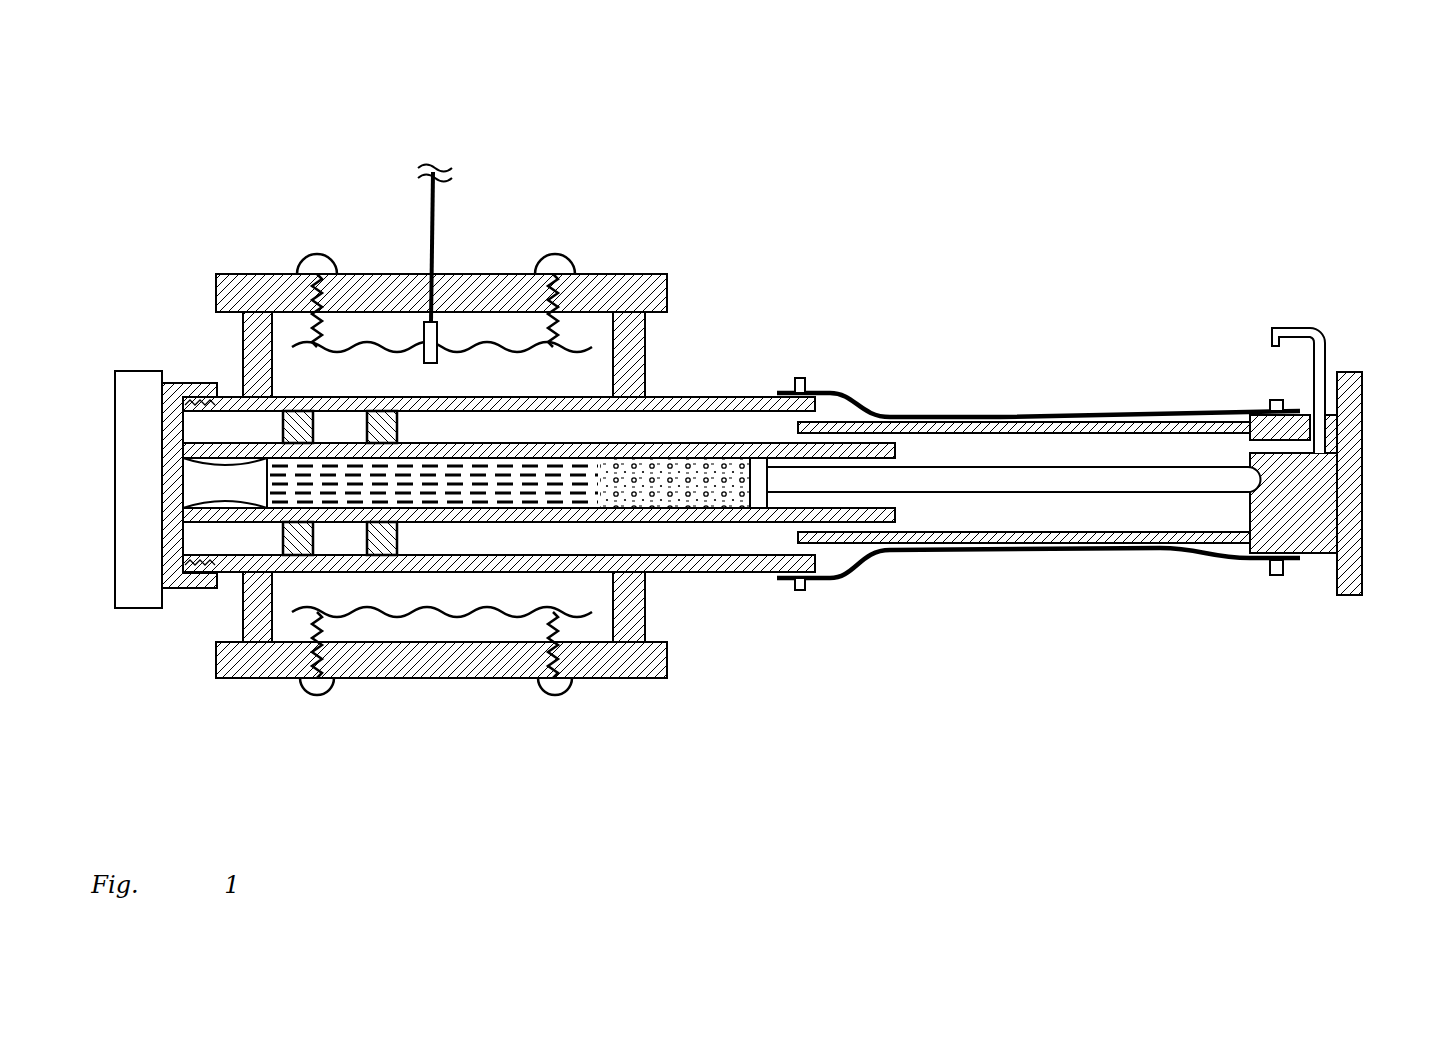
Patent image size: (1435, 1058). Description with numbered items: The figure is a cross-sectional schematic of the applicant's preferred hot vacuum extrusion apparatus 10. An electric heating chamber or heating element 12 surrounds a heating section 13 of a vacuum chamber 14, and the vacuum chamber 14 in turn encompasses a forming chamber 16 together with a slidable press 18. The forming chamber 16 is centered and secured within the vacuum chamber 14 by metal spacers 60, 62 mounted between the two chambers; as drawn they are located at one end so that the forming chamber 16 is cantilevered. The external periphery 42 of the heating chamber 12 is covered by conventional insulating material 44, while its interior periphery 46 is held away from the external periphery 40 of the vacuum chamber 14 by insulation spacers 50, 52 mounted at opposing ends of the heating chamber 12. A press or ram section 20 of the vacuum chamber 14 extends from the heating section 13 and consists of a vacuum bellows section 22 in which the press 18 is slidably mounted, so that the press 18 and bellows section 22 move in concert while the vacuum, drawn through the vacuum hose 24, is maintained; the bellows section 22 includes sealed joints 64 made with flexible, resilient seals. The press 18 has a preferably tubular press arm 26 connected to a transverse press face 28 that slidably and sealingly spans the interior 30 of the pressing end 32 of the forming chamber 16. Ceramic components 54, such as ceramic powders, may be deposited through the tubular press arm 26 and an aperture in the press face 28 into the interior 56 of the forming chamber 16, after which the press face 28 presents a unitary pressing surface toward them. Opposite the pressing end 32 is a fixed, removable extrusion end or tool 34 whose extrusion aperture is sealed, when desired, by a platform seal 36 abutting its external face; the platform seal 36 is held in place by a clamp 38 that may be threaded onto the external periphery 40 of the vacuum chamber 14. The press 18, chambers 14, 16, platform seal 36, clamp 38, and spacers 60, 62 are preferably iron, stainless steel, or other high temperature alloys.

The hot vacuum extrusion apparatus 10 is at (1145, 252).
The heating element 12 is at (497, 615).
The heating section 13 is at (499, 485).
The vacuum chamber 14 is at (456, 572).
The forming chamber 16 is at (413, 522).
The slidable press 18 is at (1148, 492).
The press section 20 is at (1372, 480).
The vacuum bellows section 22 is at (1020, 549).
The vacuum hose 24 is at (1297, 330).
The press arm 26 is at (1025, 482).
The press face 28 is at (758, 475).
The interior of the pressing end 30 is at (847, 462).
The pressing end 32 is at (677, 447).
The extrusion end 34 is at (230, 575).
The platform seal 36 is at (207, 480).
The clamp 38 is at (168, 587).
The external periphery of the vacuum chamber 40 is at (305, 565).
The external periphery of the heating chamber 42 is at (630, 678).
The insulating material 44 is at (647, 617).
The interior periphery of the heating chamber 46 is at (480, 338).
The insulation spacer 50 is at (638, 397).
The insulation spacer 52 is at (248, 375).
The ceramic components 54 is at (605, 487).
The interior of the forming chamber 56 is at (342, 487).
The metal spacer 60 is at (385, 413).
The metal spacer 62 is at (293, 413).
The sealed joint 64 is at (803, 378).